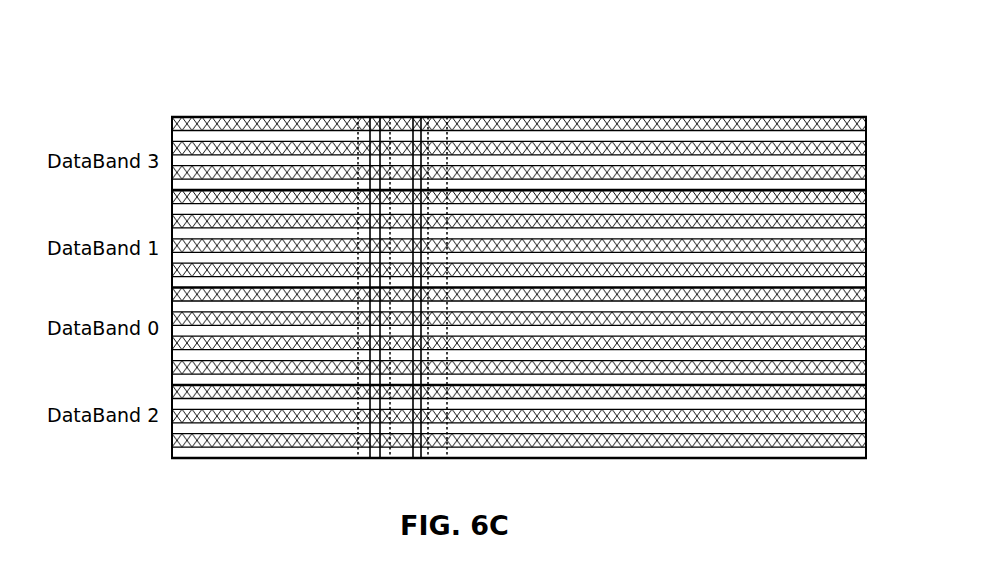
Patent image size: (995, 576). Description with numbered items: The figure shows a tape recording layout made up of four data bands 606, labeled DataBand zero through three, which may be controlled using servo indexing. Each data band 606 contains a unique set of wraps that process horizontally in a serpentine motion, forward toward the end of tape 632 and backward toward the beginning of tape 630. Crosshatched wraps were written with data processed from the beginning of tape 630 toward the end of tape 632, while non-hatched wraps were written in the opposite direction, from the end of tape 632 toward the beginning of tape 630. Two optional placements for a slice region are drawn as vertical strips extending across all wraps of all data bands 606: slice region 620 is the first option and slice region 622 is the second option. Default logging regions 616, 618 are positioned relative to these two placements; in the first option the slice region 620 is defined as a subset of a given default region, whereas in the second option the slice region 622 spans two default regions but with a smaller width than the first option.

The data band 606 is at (95, 71).
The beginning of tape 630 is at (168, 100).
The end of tape 632 is at (870, 98).
The default logging region 616 is at (356, 117).
The slice region 620 is at (379, 117).
The slice region 622 is at (446, 104).
The default logging region 618 is at (433, 134).